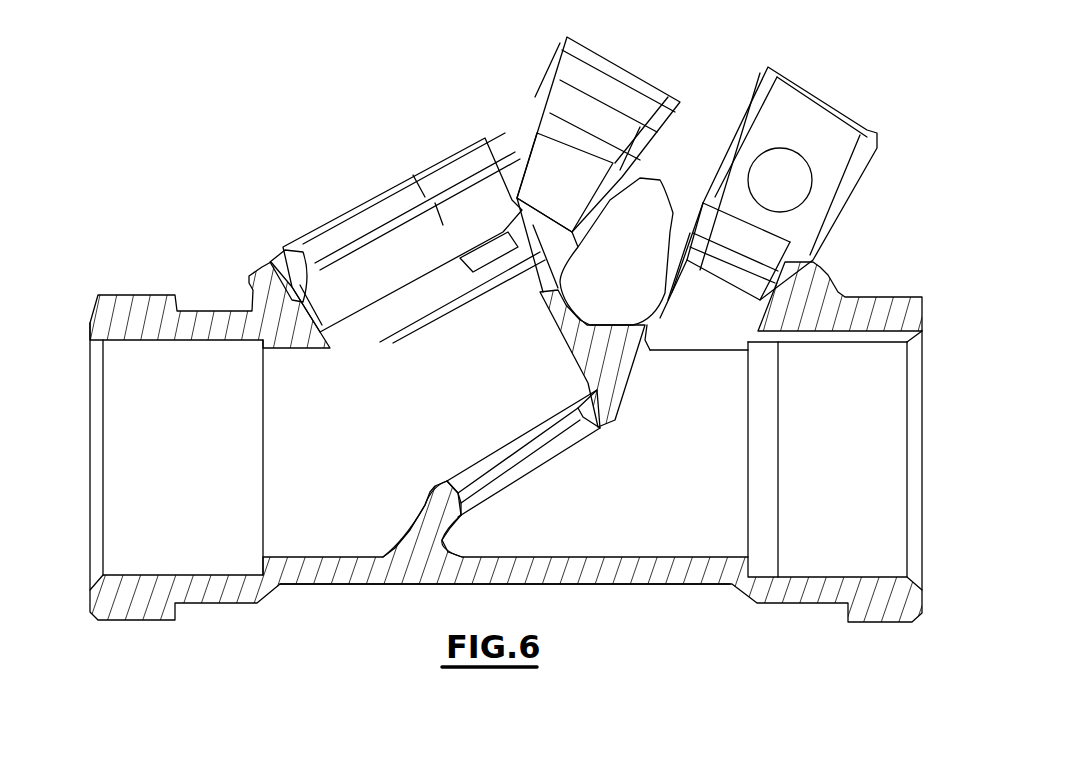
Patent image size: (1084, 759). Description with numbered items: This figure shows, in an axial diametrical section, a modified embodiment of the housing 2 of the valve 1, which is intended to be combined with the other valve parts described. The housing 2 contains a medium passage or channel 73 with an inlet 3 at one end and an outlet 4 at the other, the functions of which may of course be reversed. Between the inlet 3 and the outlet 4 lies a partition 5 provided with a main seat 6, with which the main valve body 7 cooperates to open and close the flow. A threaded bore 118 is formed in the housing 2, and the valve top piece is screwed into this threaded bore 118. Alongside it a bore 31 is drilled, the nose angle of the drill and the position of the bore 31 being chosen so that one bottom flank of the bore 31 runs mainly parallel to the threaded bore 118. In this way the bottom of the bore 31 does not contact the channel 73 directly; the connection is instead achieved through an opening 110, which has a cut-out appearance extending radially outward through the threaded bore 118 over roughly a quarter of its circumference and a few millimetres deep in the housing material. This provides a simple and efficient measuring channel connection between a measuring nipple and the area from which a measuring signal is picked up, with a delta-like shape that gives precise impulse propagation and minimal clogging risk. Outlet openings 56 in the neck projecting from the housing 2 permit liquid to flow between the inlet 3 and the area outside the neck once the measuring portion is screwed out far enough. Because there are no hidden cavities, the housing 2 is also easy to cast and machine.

The valve 1 is at (787, 610).
The housing 2 is at (643, 572).
The inlet 3 is at (887, 380).
The outlet 4 is at (135, 405).
The partition 5 is at (425, 540).
The main seat 6 is at (463, 515).
The main valve body 7 is at (336, 134).
The bore 31 is at (523, 127).
The outlet openings 56 is at (808, 193).
The medium passage 73 is at (308, 547).
The opening 110 is at (488, 250).
The threaded bore 118 is at (302, 280).